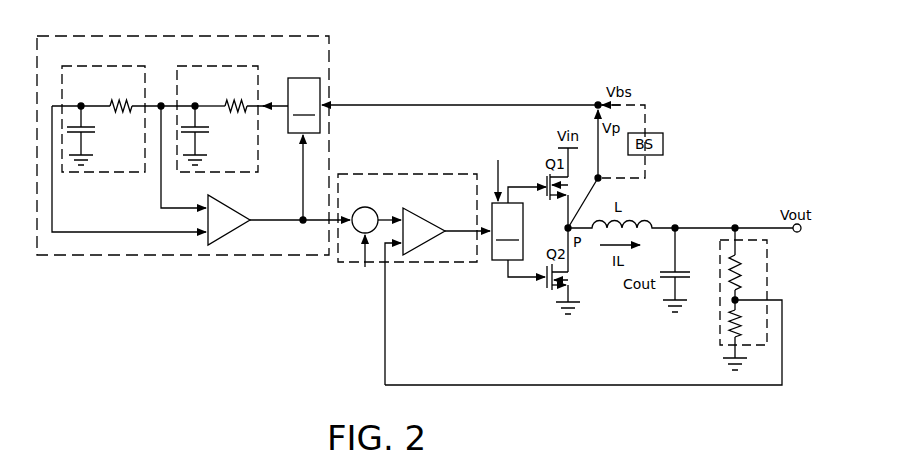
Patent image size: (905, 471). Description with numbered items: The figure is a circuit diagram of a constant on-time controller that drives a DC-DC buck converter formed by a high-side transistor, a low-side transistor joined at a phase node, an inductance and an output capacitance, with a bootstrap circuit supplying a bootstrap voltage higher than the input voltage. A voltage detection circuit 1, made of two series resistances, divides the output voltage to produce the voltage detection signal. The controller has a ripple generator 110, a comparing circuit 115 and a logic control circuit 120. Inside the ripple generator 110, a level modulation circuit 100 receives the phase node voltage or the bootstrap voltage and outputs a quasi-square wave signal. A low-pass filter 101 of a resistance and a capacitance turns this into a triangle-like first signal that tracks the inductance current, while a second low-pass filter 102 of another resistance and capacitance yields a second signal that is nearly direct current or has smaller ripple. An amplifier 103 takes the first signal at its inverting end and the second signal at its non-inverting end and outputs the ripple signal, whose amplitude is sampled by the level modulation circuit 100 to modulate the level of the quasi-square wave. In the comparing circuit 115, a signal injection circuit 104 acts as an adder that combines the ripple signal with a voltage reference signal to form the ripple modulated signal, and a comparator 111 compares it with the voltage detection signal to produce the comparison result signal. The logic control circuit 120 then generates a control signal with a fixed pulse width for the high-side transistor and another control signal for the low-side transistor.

The voltage detection circuit 1 is at (768, 246).
The level modulation circuit 100 is at (443, 149).
The low-pass filter 101 is at (215, 66).
The low-pass filter 102 is at (102, 66).
The amplifier 103 is at (237, 233).
The signal injection circuit 104 is at (363, 208).
The ripple generator 110 is at (329, 78).
The comparator 111 is at (430, 239).
The comparing circuit 115 is at (404, 176).
The logic control circuit 120 is at (514, 221).